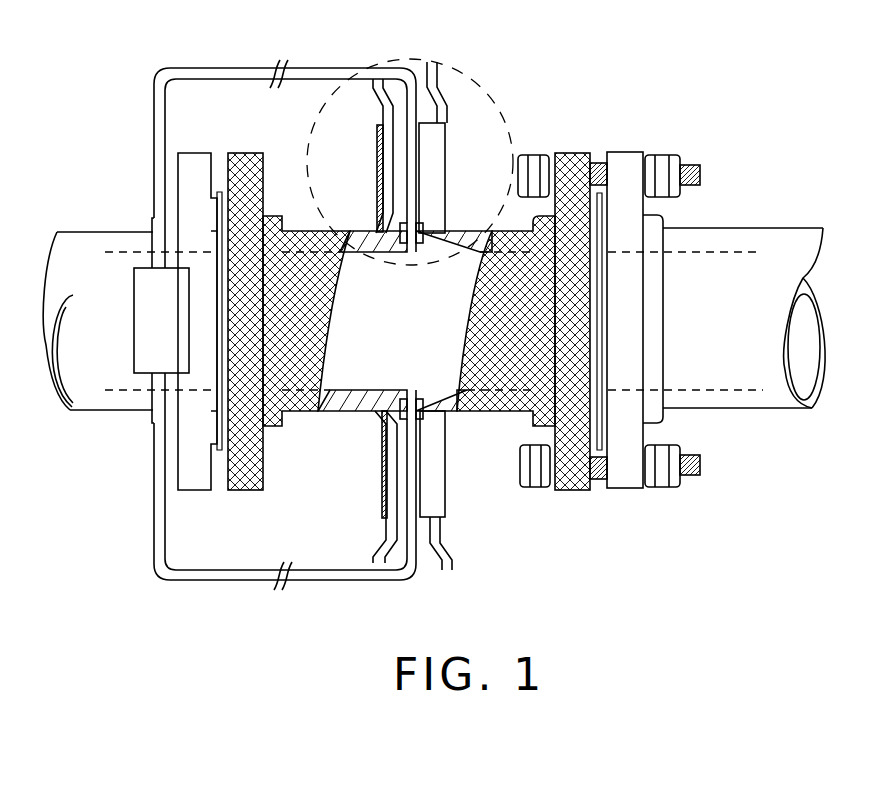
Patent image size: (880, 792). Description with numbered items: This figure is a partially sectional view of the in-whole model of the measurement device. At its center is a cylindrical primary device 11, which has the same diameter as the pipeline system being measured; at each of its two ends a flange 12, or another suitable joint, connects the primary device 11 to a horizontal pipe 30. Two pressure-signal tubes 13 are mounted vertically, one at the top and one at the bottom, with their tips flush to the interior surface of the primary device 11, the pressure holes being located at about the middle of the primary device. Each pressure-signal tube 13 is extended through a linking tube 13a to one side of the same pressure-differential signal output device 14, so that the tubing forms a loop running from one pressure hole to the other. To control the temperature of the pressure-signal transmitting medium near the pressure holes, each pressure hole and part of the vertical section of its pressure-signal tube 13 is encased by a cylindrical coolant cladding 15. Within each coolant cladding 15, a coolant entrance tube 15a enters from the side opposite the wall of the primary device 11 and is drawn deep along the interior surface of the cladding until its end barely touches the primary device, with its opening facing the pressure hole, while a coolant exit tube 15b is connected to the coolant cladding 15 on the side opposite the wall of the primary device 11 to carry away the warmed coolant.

The cylindrical primary device 11 is at (300, 230).
The flange 12 is at (246, 152).
The pressure-signal tube 13 is at (418, 88).
The linking tube 13a is at (222, 68).
The pressure-differential signal output device 14 is at (134, 308).
The cylindrical coolant cladding 15 is at (444, 176).
The coolant entrance tube 15a is at (373, 106).
The coolant exit tube 15b is at (449, 103).
The horizontal pipe 30 is at (742, 228).